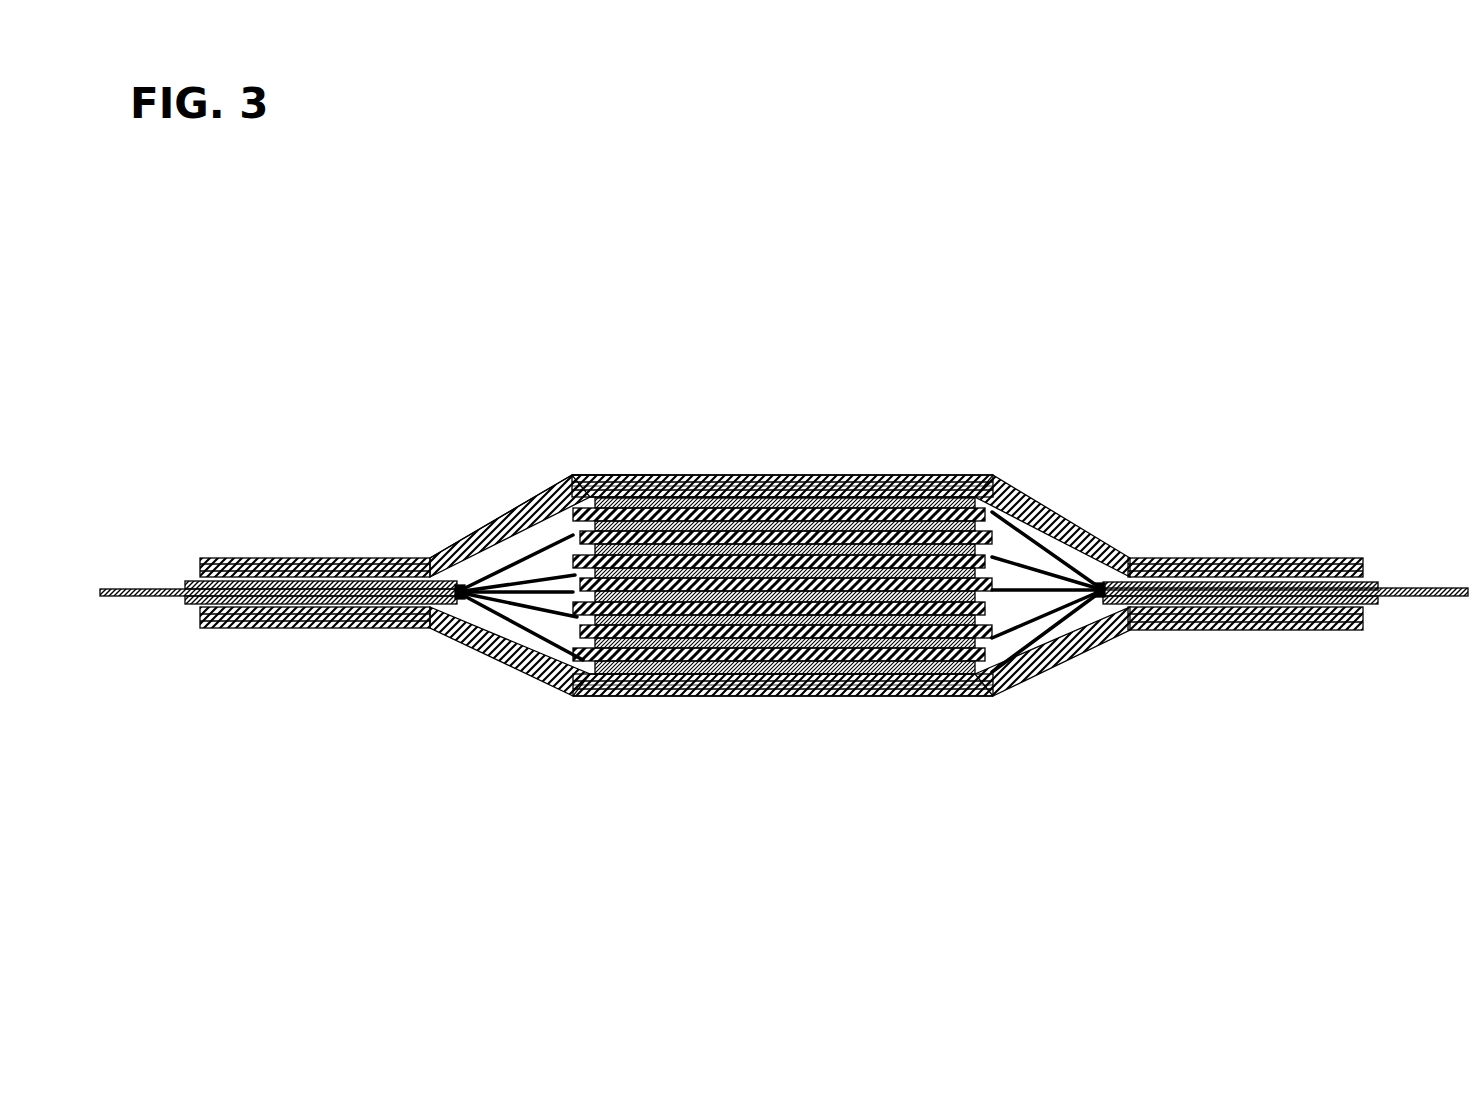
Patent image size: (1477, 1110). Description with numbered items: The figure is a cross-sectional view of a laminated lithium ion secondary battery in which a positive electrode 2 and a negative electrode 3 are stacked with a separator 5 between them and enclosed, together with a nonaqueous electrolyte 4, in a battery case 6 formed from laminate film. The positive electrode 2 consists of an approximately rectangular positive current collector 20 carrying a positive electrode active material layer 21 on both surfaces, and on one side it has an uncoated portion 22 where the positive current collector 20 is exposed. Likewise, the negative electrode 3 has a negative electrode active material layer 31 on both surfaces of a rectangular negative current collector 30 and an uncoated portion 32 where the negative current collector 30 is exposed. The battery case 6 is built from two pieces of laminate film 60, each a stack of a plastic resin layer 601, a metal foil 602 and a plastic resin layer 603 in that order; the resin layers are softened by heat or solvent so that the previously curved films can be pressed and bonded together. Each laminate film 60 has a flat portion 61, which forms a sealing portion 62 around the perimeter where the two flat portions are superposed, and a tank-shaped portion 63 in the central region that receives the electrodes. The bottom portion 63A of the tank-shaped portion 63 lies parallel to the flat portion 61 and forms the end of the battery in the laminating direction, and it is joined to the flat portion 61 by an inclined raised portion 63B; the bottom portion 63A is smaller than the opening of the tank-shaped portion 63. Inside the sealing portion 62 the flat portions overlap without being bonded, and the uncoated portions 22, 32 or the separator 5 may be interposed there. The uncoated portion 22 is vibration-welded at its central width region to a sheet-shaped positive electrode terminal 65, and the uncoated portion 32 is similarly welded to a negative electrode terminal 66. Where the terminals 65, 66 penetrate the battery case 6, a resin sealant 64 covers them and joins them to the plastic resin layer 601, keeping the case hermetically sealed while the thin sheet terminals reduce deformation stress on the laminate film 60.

The positive electrode 2 is at (352, 363).
The positive current collector 20 is at (713, 652).
The positive electrode active material layer 21 is at (646, 656).
The uncoated portion 22 is at (500, 603).
The negative electrode 3 is at (1022, 372).
The negative current collector 30 is at (840, 490).
The negative electrode active material layer 31 is at (913, 490).
The uncoated portion 32 is at (1013, 490).
The nonaqueous electrolyte 4 is at (478, 612).
The separator 5 is at (742, 535).
The battery case 6 is at (1072, 650).
The laminate film 60 is at (810, 787).
The plastic resin layer 601 is at (860, 696).
The metal foil 602 is at (908, 696).
The plastic resin layer 603 is at (962, 696).
The flat portion 61 is at (262, 558).
The sealing portion 62 is at (1230, 558).
The tank-shaped portion 63 is at (650, 347).
The bottom portion 63A is at (607, 478).
The raised portion 63B is at (529, 500).
The sealant 64 is at (230, 630).
The positive electrode terminal 65 is at (104, 598).
The negative electrode terminal 66 is at (1455, 600).